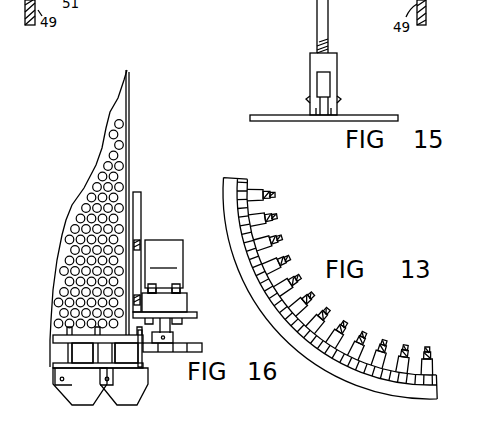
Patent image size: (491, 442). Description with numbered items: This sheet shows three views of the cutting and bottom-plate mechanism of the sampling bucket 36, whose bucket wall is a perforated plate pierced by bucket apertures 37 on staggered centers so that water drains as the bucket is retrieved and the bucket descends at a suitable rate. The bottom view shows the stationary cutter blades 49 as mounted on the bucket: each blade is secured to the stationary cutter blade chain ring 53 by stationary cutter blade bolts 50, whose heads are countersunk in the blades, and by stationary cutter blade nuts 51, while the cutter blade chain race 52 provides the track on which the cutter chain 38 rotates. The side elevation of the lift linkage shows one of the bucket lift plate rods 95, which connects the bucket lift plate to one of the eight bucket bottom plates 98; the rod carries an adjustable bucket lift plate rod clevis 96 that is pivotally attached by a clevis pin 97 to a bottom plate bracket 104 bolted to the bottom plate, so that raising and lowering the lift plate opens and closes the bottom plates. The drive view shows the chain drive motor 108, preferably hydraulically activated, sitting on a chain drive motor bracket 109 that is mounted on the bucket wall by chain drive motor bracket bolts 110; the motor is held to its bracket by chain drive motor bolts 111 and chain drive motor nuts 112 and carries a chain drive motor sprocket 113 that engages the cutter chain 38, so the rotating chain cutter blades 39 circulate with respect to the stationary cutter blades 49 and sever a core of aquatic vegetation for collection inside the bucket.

In FIG. 16, the sampling bucket 36 is at (120, 109).
In FIG. 16, the bucket apertures 37 is at (123, 163).
In FIG. 16, the cutter chain 38 is at (143, 358).
In FIG. 16, the chain cutter blades 39 is at (80, 386).
In FIG. 16, the stationary cutter blades 49 is at (124, 386).
In FIG. 13, the stationary cutter blades 49 is at (242, 207).
In FIG. 13, the stationary cutter blade bolts 50 is at (273, 232).
In FIG. 13, the stationary cutter blade nuts 51 is at (288, 270).
In FIG. 13, the chain race 52 is at (330, 292).
In FIG. 13, the stationary cutter blade chain ring 53 is at (318, 328).
In FIG. 15, the bucket lift plate rods 95 is at (323, 27).
In FIG. 15, the bucket lift plate rod clevis 96 is at (330, 69).
In FIG. 15, the clevis pin 97 is at (340, 99).
In FIG. 15, the bucket bottom plates 98 is at (393, 114).
In FIG. 15, the bottom plate brackets 104 is at (323, 107).
In FIG. 16, the chain drive motor 108 is at (164, 266).
In FIG. 16, the chain drive motor bracket 109 is at (165, 314).
In FIG. 16, the chain drive motor bracket bolts 110 is at (138, 193).
In FIG. 16, the chain drive motor bolts 111 is at (151, 287).
In FIG. 16, the chain drive motor nuts 112 is at (196, 316).
In FIG. 16, the chain drive motor sprocket 113 is at (198, 343).